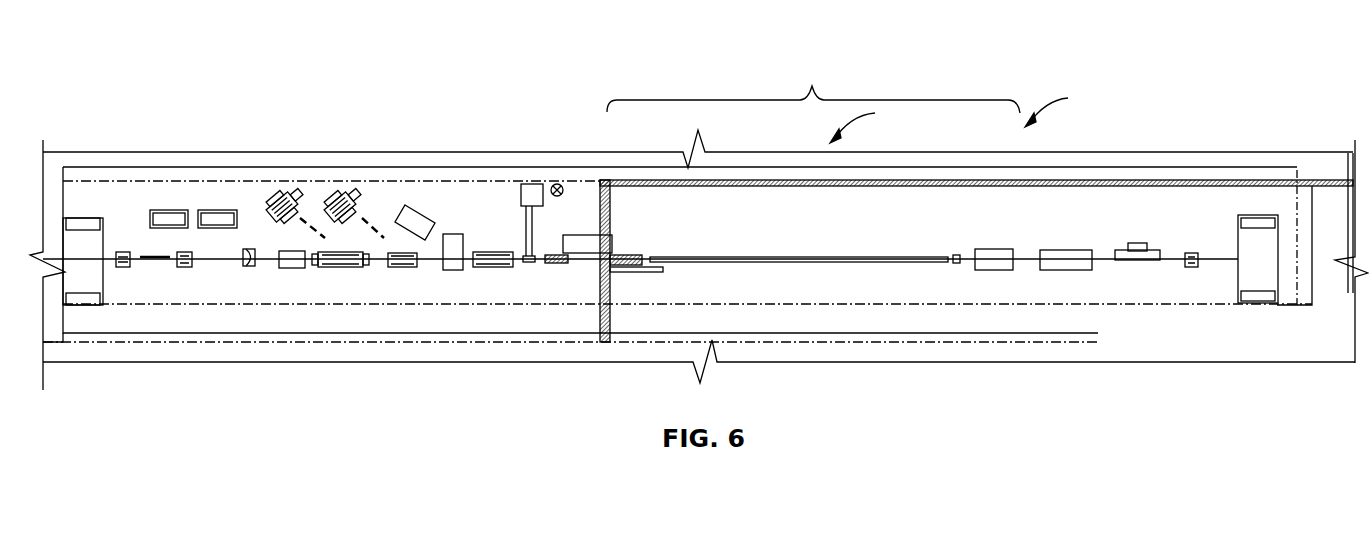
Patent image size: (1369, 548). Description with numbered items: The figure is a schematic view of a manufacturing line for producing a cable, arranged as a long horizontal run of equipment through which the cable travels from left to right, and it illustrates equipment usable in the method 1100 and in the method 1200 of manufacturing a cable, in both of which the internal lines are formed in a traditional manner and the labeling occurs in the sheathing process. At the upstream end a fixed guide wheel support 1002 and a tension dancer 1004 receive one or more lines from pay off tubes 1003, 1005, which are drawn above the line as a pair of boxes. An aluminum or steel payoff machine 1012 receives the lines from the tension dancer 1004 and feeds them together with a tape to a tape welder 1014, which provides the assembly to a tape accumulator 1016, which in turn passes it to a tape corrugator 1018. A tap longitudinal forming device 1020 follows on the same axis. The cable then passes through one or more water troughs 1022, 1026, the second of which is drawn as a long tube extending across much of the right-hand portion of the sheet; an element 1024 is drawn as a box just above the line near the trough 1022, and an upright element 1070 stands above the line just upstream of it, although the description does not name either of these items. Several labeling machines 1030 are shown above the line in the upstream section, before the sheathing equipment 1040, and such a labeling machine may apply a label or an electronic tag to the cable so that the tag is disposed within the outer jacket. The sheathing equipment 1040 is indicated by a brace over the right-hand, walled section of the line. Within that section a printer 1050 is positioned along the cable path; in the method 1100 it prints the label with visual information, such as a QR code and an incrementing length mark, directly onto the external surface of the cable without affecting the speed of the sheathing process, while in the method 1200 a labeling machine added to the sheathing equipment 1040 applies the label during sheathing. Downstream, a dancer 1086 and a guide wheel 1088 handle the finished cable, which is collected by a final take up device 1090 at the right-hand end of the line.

The fixed guide wheel support 1002 is at (118, 252).
The pay off tube 1003 is at (168, 210).
The tension dancer 1004 is at (184, 252).
The pay off tube 1005 is at (222, 210).
The payoff machine 1012 is at (247, 265).
The tape welder 1014 is at (290, 268).
The tape accumulator 1016 is at (335, 267).
The tape corrugator 1018 is at (400, 267).
The tap longitudinal forming device 1020 is at (493, 268).
The water trough 1022 is at (575, 262).
The beam line element 1024 is at (593, 235).
The water trough 1026 is at (903, 263).
The labeling machine 1030 is at (287, 185).
The sheathing equipment 1040 is at (813, 86).
The printer 1050 is at (993, 270).
The sensor stand 1070 is at (530, 184).
The dancer 1086 is at (1135, 260).
The guide wheel 1088 is at (1192, 267).
The final take up device 1090 is at (1260, 303).
The method of manufacturing a cable 1100 is at (887, 124).
The method of manufacturing a cable 1200 is at (1080, 108).